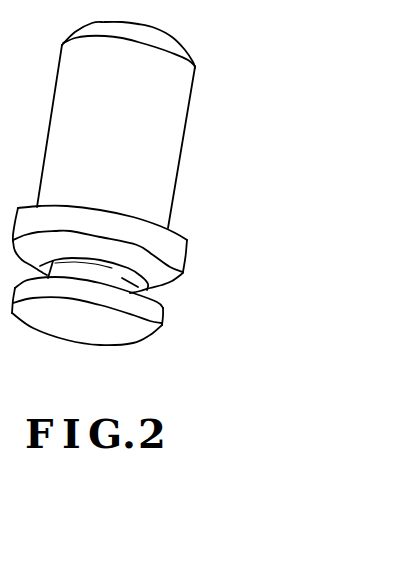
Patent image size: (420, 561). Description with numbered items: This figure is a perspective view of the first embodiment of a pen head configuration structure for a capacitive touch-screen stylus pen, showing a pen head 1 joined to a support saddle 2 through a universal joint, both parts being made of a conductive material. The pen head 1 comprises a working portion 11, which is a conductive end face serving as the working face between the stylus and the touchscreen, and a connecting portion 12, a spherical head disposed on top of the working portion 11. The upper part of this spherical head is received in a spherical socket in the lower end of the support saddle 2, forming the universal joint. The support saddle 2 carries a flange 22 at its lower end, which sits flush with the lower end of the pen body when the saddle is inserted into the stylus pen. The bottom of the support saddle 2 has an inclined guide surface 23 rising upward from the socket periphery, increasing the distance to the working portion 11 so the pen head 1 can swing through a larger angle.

The pen head 1 is at (149, 320).
The support saddle 2 is at (158, 128).
The working portion 11 is at (243, 295).
The connecting portion 12 is at (135, 289).
The flange 22 is at (175, 243).
The inclined guide surface 23 is at (163, 267).